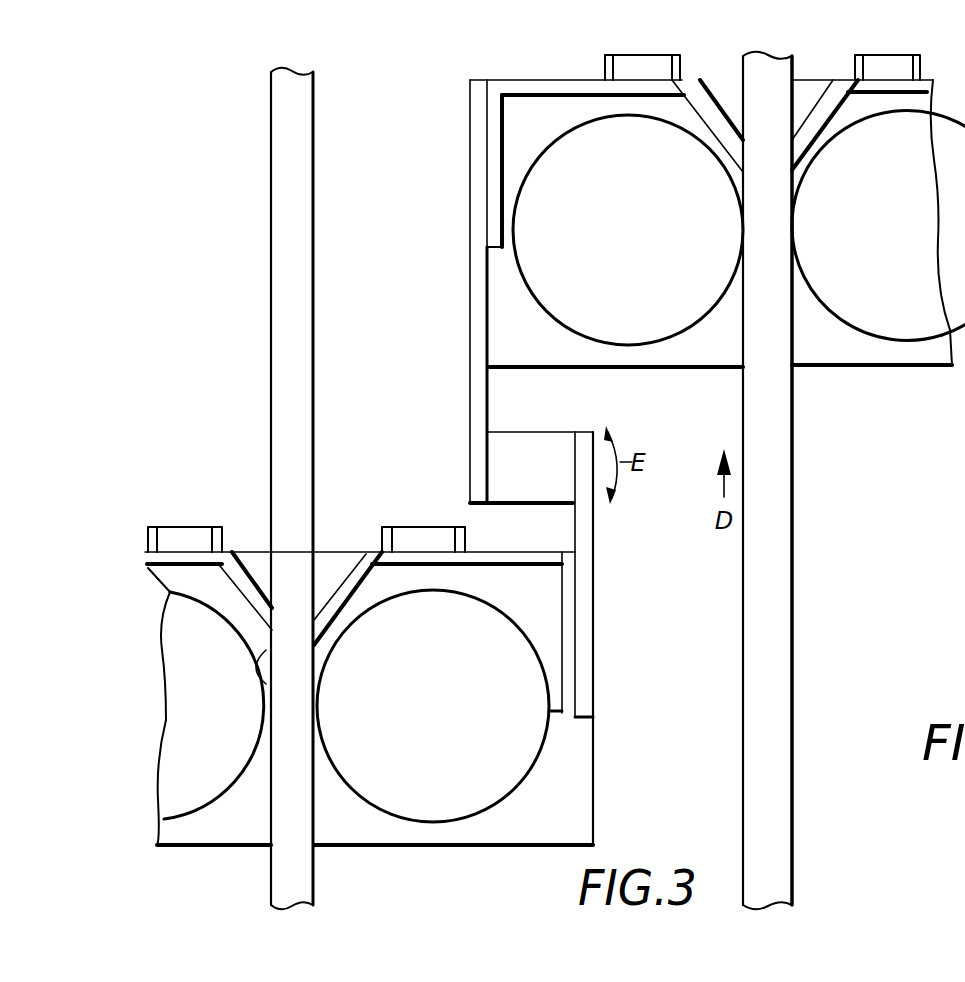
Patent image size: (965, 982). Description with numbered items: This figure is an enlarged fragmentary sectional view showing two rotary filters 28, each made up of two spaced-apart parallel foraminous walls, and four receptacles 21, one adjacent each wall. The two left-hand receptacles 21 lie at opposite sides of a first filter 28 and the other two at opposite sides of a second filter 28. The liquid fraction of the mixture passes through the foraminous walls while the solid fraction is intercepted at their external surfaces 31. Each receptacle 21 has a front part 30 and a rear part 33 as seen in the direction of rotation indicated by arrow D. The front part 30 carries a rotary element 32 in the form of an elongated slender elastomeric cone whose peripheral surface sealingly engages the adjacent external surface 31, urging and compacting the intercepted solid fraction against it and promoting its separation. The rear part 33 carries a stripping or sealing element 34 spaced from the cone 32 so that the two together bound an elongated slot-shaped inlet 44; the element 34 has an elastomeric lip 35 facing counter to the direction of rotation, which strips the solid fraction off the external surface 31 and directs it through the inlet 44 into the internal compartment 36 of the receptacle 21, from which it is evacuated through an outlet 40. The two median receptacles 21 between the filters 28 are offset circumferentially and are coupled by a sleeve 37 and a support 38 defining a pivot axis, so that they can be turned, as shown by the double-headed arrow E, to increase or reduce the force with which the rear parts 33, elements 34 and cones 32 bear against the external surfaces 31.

The receptacle 21 is at (478, 155).
The filter 28 is at (535, 481).
The front part 30 is at (705, 347).
The external surface 31 is at (270, 455).
The rotary element 32 is at (565, 250).
The rear part 33 is at (623, 90).
The stripping or sealing element 34 is at (812, 118).
The lip 35 is at (790, 165).
The internal compartment 36 is at (527, 110).
The sleeve 37 is at (552, 453).
The support 38 is at (532, 470).
The outlet 40 is at (660, 72).
The inlet 44 is at (805, 168).